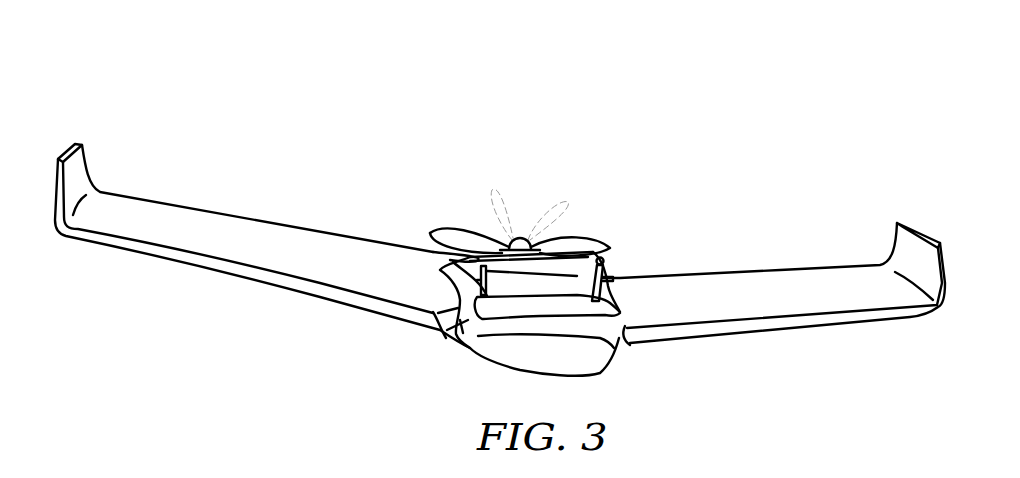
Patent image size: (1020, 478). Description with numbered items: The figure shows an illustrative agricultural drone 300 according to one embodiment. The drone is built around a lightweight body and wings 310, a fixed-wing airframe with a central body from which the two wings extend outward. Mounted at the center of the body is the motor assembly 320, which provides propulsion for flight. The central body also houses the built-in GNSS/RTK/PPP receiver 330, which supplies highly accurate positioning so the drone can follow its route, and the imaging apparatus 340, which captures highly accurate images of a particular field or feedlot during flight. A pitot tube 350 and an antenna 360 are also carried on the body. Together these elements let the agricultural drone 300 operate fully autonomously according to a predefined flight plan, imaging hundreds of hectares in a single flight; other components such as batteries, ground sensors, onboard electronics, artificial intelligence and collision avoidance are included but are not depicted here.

The agricultural drone 300 is at (500, 221).
The lightweight body and wings 310 is at (799, 287).
The motor assembly 320 is at (468, 233).
The built-in GNSS/RTK/PPP receiver 330 is at (563, 307).
The imaging apparatus 340 is at (537, 257).
The pitot tube 350 is at (468, 282).
The antenna 360 is at (604, 258).